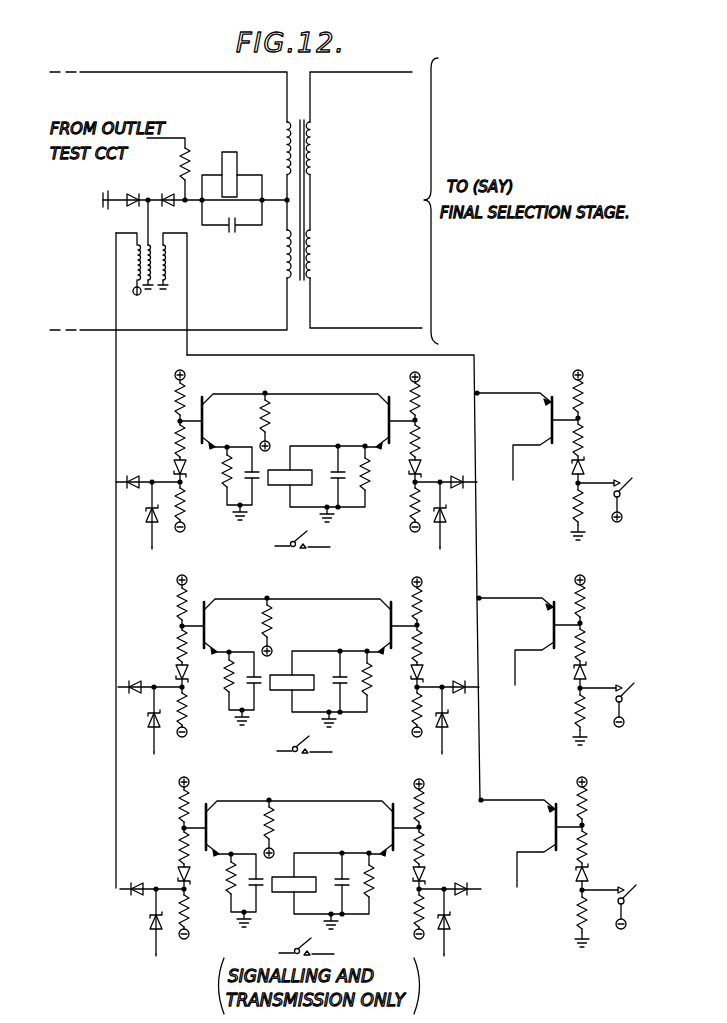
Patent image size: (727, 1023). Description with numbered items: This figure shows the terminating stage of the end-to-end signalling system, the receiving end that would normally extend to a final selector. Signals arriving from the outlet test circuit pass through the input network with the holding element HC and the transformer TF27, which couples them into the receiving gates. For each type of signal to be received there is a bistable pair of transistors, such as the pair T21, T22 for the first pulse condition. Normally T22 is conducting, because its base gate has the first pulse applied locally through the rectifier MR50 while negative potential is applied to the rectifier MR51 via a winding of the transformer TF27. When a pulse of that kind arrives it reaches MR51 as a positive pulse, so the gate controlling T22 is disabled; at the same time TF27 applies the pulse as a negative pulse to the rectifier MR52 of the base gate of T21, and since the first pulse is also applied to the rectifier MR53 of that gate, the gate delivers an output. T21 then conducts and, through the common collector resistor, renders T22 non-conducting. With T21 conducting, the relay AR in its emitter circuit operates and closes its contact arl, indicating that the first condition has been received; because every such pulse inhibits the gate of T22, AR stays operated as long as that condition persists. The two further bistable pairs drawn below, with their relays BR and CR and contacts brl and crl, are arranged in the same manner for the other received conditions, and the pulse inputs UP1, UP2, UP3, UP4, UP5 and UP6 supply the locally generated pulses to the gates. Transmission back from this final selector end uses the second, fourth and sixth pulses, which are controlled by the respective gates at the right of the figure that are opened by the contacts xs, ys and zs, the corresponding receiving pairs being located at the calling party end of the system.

The holding coil / relay HC is at (232, 183).
The transformer TF27 is at (121, 277).
The transistor T22 is at (233, 457).
The transistor T21 is at (340, 421).
The relay AR is at (313, 485).
The relay BR is at (321, 687).
The relay CR is at (318, 889).
The rectifier MR50 is at (146, 517).
The rectifier MR51 is at (156, 466).
The rectifier MR52 is at (436, 466).
The rectifier MR53 is at (448, 516).
The pulse input UP1 is at (153, 558).
The pulse input UP2 is at (526, 447).
The pulse input UP3 is at (155, 763).
The pulse input UP4 is at (528, 651).
The pulse input UP5 is at (163, 965).
The pulse input UP6 is at (530, 854).
The contact arl is at (302, 538).
The relay BR contact br1 brl is at (304, 742).
The relay CR contact cr1 crl is at (306, 944).
The contact xs is at (631, 498).
The contact ys is at (633, 703).
The contact zs is at (635, 907).